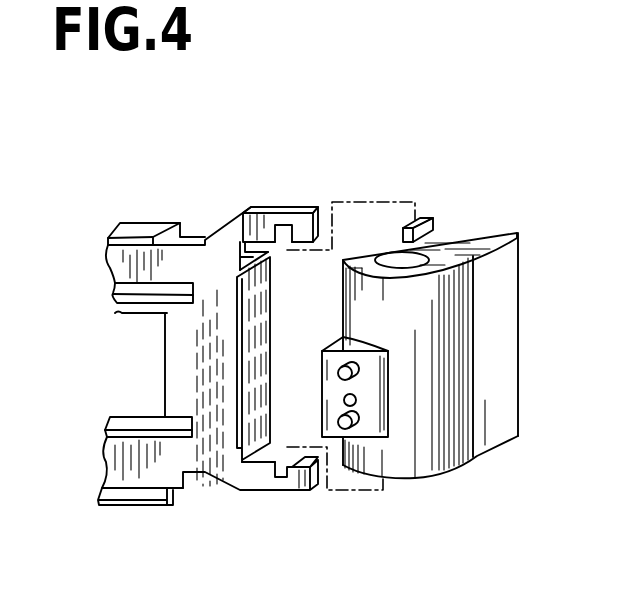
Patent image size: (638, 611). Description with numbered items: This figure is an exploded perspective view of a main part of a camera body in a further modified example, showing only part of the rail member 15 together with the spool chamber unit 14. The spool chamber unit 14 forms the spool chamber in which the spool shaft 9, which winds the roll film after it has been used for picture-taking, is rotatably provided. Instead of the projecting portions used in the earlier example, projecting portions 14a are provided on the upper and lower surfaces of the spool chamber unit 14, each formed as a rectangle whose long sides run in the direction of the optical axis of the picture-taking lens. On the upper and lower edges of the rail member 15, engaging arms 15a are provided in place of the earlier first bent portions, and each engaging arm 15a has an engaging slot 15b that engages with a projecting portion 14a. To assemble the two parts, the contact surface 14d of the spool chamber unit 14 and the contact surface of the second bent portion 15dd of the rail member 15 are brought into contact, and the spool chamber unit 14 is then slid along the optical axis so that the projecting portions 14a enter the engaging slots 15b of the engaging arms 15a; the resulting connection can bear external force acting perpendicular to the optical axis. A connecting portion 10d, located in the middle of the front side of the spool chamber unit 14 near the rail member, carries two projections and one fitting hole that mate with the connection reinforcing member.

The rail member 15 is at (143, 228).
The engaging arm 15a is at (283, 232).
The engaging slot 15b is at (280, 226).
The second bent portion 15dd is at (250, 448).
The spool chamber unit 14 is at (483, 240).
The projecting portion 14a is at (428, 217).
The contact surface 14d is at (364, 230).
The spool shaft 9 is at (399, 252).
The connecting portion 10d is at (377, 408).